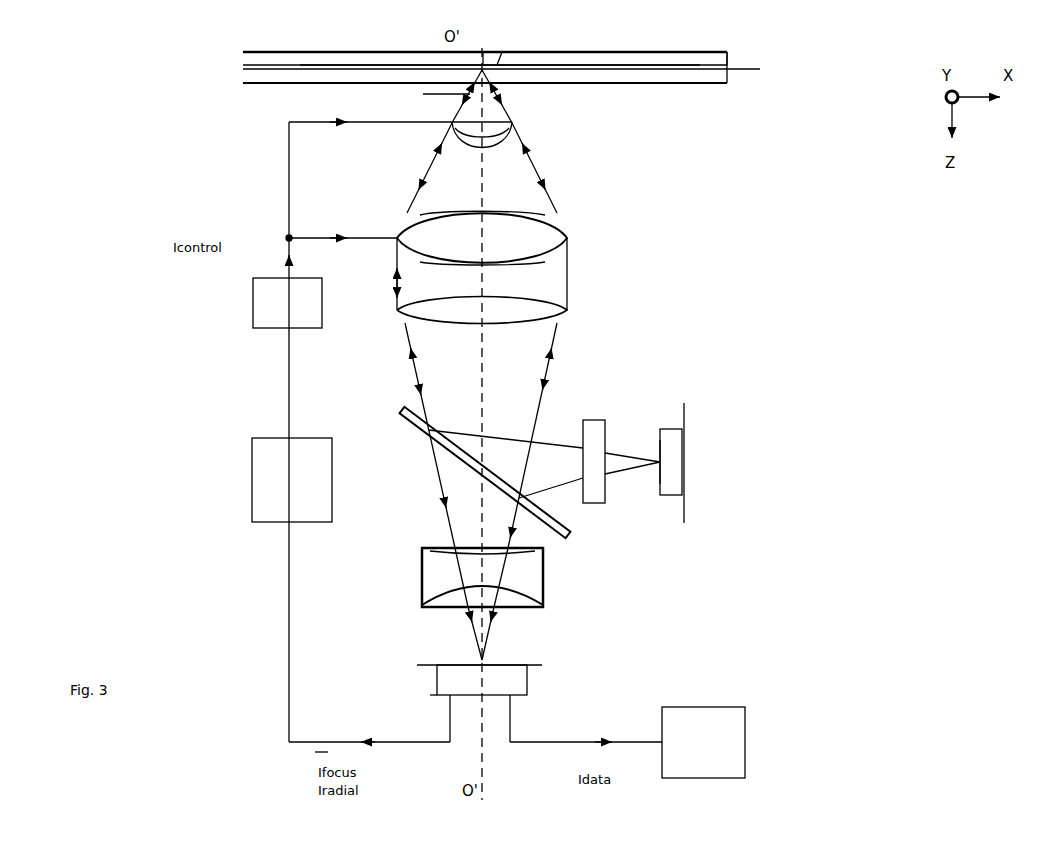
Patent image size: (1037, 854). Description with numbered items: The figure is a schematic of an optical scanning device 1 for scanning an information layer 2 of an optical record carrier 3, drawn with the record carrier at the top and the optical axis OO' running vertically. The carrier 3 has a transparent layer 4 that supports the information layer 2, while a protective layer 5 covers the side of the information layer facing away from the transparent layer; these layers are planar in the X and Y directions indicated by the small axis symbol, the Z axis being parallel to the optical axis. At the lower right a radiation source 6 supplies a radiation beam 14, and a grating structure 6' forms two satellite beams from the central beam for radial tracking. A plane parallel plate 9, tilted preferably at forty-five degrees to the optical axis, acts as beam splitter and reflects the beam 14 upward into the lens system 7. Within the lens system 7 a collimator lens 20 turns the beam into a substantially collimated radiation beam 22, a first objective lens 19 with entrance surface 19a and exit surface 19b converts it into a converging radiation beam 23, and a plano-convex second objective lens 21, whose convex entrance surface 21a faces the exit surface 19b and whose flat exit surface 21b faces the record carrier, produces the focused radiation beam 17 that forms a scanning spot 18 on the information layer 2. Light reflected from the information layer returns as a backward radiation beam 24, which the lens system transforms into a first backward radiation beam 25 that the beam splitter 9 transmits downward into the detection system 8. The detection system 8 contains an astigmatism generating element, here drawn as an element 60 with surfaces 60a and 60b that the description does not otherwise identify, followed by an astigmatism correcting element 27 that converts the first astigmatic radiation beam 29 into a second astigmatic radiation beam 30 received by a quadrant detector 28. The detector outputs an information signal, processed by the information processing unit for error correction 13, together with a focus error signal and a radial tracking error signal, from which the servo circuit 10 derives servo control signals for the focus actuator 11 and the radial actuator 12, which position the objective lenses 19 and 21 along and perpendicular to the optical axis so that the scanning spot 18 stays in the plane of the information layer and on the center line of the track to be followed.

The optical scanning device 1 is at (776, 328).
The information layer 2 is at (511, 67).
The optical record carrier 3 is at (624, 46).
The transparent layer 4 is at (660, 78).
The protective layer 5 is at (728, 65).
The radiation source 6 is at (671, 477).
The grating structure 6' is at (591, 435).
The lens system 7 is at (521, 228).
The detection system 8 is at (493, 613).
The plane parallel plate 9 is at (400, 417).
The servo circuit 10 is at (252, 500).
The focus actuator 11 is at (253, 304).
The radial actuator 12 is at (252, 305).
The information processing unit for error correction 13 is at (700, 707).
The radiation beam 14 is at (637, 460).
The focused radiation beam 17 is at (430, 99).
The scanning spot 18 is at (515, 46).
The first objective lens 19 is at (486, 232).
The entrance surface 19a is at (438, 263).
The exit surface 19b is at (425, 216).
The collimator lens 20 is at (535, 312).
The second objective lens 21 is at (532, 136).
The convex entrance surface 21a is at (498, 148).
The flat exit surface 21b is at (504, 106).
The collimated radiation beam 22 is at (394, 283).
The converging radiation beam 23 is at (453, 127).
The backward radiation beam 24 is at (465, 99).
The first backward radiation beam 25 is at (417, 392).
The astigmatism correcting element 27 is at (518, 533).
The quadrant detector 28 is at (498, 660).
The first astigmatic radiation beam 29 is at (441, 504).
The second astigmatic radiation beam 30 is at (471, 624).
The collimator lens 60 is at (443, 565).
The first surface of collimator lens 60a is at (472, 545).
The second surface of collimator lens 60b is at (440, 594).